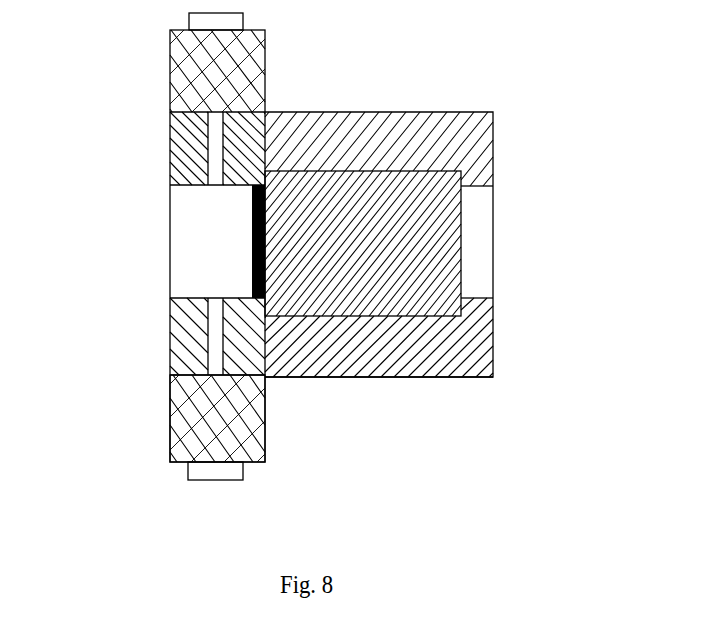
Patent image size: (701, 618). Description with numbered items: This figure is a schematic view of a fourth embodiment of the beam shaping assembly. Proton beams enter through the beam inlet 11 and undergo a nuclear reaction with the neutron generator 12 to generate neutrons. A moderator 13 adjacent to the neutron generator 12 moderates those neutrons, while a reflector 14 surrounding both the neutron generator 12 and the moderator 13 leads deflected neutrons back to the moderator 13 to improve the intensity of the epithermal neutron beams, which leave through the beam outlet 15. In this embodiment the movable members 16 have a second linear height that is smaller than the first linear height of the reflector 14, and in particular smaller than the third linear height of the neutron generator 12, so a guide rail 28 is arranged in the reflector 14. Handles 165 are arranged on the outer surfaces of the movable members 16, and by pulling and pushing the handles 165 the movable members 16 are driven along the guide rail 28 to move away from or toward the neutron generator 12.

The beam inlet 11 is at (170, 283).
The neutron generator 12 is at (250, 288).
The moderator 13 is at (408, 285).
The reflector 14 is at (369, 349).
The beam outlet 15 is at (493, 233).
The movable members 16 is at (208, 400).
The handles 165 is at (220, 471).
The guide rail 28 is at (218, 147).